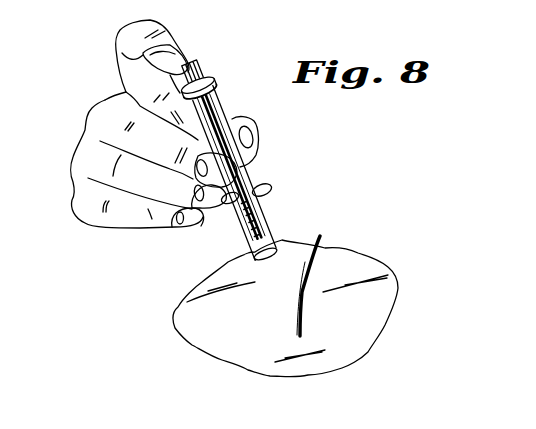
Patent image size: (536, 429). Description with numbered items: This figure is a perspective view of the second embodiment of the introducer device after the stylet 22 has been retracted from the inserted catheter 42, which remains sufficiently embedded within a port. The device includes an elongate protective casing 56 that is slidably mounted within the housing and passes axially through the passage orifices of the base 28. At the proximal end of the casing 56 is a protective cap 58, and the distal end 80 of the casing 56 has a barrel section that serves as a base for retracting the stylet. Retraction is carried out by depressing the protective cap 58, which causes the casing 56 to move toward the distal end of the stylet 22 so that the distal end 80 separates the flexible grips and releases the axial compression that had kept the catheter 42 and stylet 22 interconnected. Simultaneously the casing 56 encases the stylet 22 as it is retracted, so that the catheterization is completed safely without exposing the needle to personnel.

The stylet 22 is at (269, 231).
The base 28 is at (216, 79).
The catheter 42 is at (298, 289).
The protective casing 56 is at (268, 193).
The protective cap 58 is at (188, 62).
The distal end 80 is at (228, 262).